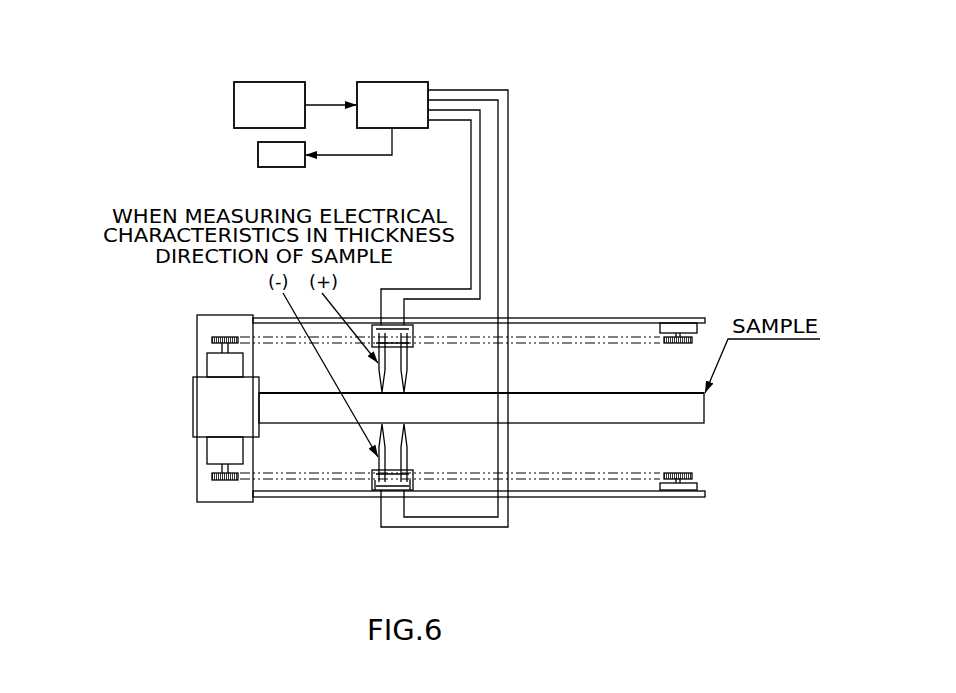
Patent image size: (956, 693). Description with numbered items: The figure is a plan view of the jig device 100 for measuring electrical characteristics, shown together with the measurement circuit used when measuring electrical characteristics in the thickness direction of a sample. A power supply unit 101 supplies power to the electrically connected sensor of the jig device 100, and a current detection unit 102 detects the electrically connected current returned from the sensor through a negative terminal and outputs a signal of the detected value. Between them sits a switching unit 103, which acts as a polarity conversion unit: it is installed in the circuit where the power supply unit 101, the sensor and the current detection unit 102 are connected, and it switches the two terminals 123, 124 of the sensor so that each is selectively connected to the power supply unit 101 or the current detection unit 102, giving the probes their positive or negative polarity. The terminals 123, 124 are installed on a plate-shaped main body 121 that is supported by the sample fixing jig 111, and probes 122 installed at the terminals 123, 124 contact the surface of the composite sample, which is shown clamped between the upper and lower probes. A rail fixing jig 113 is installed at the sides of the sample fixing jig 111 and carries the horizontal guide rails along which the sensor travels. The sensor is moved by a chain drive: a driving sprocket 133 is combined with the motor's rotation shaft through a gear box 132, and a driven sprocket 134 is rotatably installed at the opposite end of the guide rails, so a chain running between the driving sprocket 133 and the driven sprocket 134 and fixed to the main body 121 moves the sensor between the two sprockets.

The jig device for measuring electrical characteristics 100 is at (713, 307).
The power supply unit 101 is at (234, 101).
The current detection unit 102 is at (258, 150).
The switching unit 103 is at (392, 82).
The sample fixing jig 111 is at (208, 403).
The rail fixing jig 113 is at (198, 462).
The main body 121 is at (392, 488).
The probes 122 is at (403, 453).
The terminal 123 is at (370, 481).
The terminal 124 is at (415, 481).
The gear box 132 is at (237, 452).
The driving sprocket 133 is at (217, 480).
The driven sprocket 134 is at (690, 475).